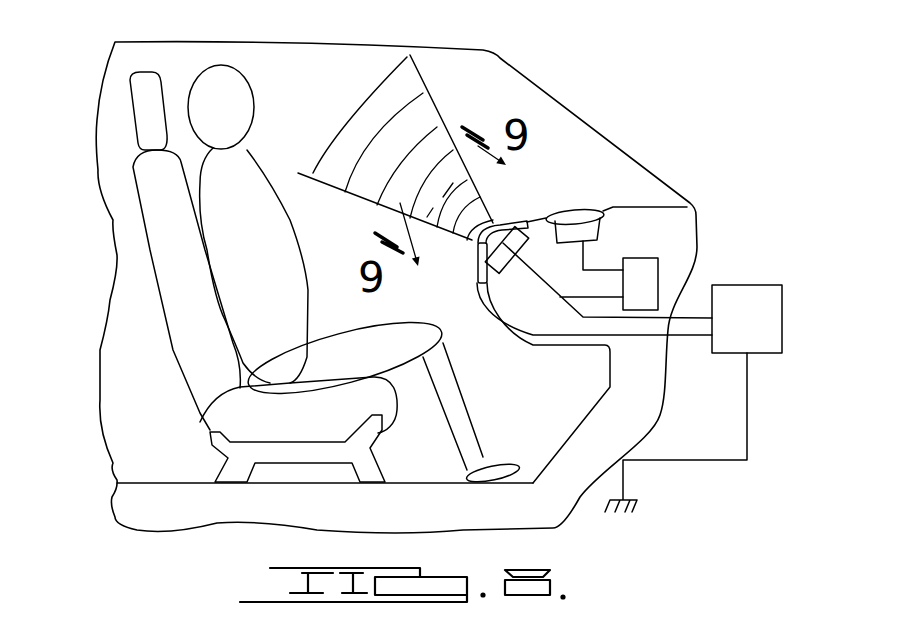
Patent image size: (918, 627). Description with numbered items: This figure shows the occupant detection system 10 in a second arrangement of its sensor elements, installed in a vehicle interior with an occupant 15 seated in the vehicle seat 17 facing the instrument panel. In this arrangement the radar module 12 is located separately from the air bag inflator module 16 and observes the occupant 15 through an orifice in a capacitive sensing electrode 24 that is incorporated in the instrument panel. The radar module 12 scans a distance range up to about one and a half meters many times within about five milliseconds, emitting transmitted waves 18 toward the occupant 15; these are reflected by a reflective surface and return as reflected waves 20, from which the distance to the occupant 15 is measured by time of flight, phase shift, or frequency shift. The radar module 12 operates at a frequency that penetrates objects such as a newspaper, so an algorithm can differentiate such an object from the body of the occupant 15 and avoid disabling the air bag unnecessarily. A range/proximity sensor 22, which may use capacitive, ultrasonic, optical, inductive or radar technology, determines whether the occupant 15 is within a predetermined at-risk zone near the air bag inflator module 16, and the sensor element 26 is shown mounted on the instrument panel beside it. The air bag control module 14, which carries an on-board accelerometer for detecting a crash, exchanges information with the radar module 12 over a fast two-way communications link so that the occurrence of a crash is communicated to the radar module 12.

The occupant detection system 10 is at (645, 100).
The radar module 12 is at (506, 283).
The air bag control module 14 is at (653, 275).
The occupant 15 is at (250, 100).
The air bag inflator module 16 is at (600, 233).
The vehicle seat 17 is at (133, 190).
The transmitted waves 18 is at (315, 173).
The reflected waves 20 is at (395, 87).
The range/proximity sensor 22 is at (770, 335).
The capacitive sensing electrode 24 is at (475, 250).
The sensor transducer 26 is at (572, 210).